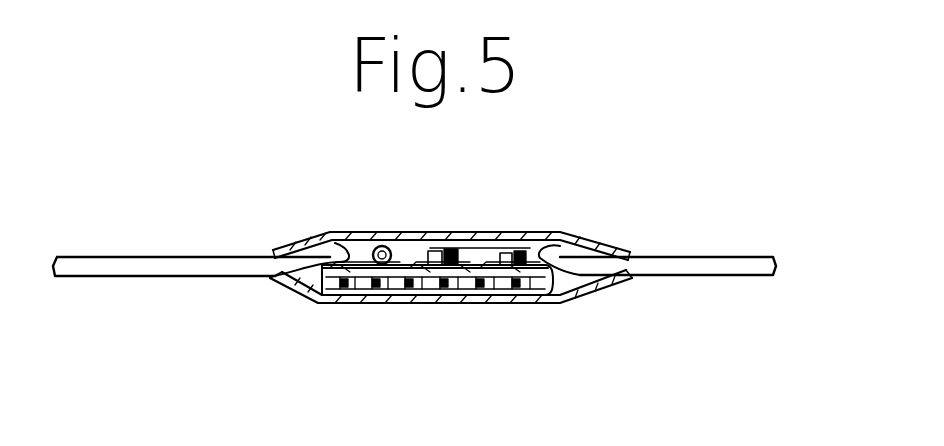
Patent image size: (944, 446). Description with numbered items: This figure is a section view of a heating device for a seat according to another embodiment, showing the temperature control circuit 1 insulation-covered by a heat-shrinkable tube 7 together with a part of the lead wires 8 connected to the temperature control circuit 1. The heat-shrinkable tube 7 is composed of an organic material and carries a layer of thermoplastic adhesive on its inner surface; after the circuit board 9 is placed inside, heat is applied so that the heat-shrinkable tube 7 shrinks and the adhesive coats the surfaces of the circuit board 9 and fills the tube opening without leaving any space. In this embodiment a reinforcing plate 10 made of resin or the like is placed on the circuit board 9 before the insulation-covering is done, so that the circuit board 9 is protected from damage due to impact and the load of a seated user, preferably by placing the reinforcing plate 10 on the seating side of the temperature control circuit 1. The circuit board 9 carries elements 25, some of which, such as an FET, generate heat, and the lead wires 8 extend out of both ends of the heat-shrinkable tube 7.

The temperature control circuit 1 is at (605, 226).
The heat-shrinkable tube 7 is at (478, 232).
The lead wires 8 is at (80, 274).
The circuit board 9 is at (346, 266).
The reinforcing plate 10 is at (480, 293).
The element 25 is at (380, 246).